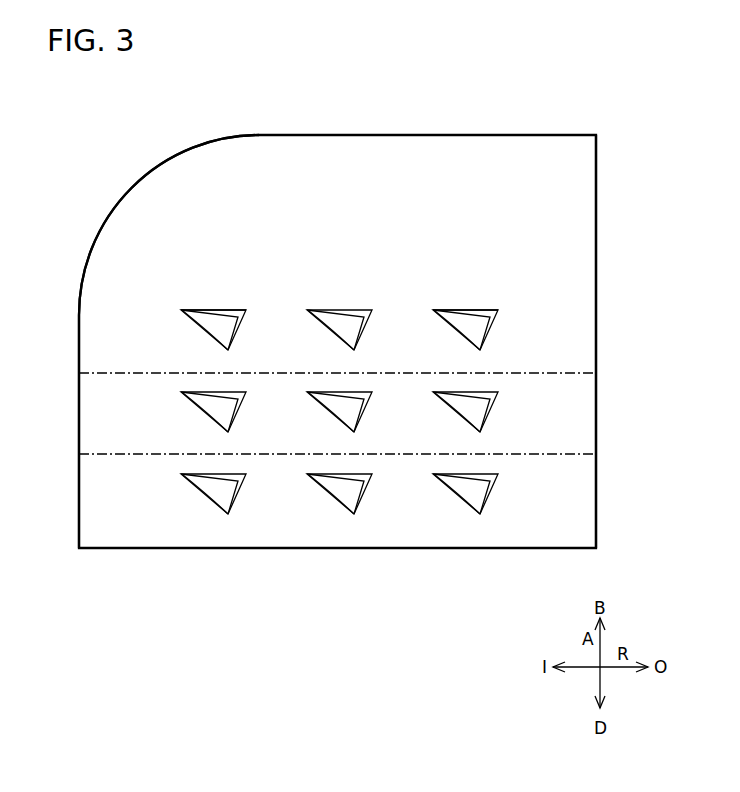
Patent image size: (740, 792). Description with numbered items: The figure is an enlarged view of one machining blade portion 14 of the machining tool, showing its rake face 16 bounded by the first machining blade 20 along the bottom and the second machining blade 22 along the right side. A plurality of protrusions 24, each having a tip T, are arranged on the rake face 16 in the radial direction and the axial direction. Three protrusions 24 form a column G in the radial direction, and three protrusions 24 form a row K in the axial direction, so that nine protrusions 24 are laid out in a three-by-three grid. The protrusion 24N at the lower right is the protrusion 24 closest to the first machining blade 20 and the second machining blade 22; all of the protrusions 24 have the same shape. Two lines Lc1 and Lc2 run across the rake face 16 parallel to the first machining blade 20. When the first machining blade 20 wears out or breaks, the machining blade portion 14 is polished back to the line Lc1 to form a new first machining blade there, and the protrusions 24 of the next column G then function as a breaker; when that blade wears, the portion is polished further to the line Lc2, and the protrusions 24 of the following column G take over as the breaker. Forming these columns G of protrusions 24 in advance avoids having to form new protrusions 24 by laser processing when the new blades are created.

The machining blade portion 14 is at (99, 219).
The rake face 16 is at (98, 537).
The first machining blade 20 is at (240, 549).
The second machining blade 22 is at (597, 267).
The protrusion 24 is at (330, 425).
The protrusion closest to the first and second machining blades 24N is at (446, 486).
The line Lc1 is at (95, 457).
The line Lc2 is at (95, 376).
The row K is at (208, 300).
The column G is at (555, 335).
The tip T is at (228, 350).